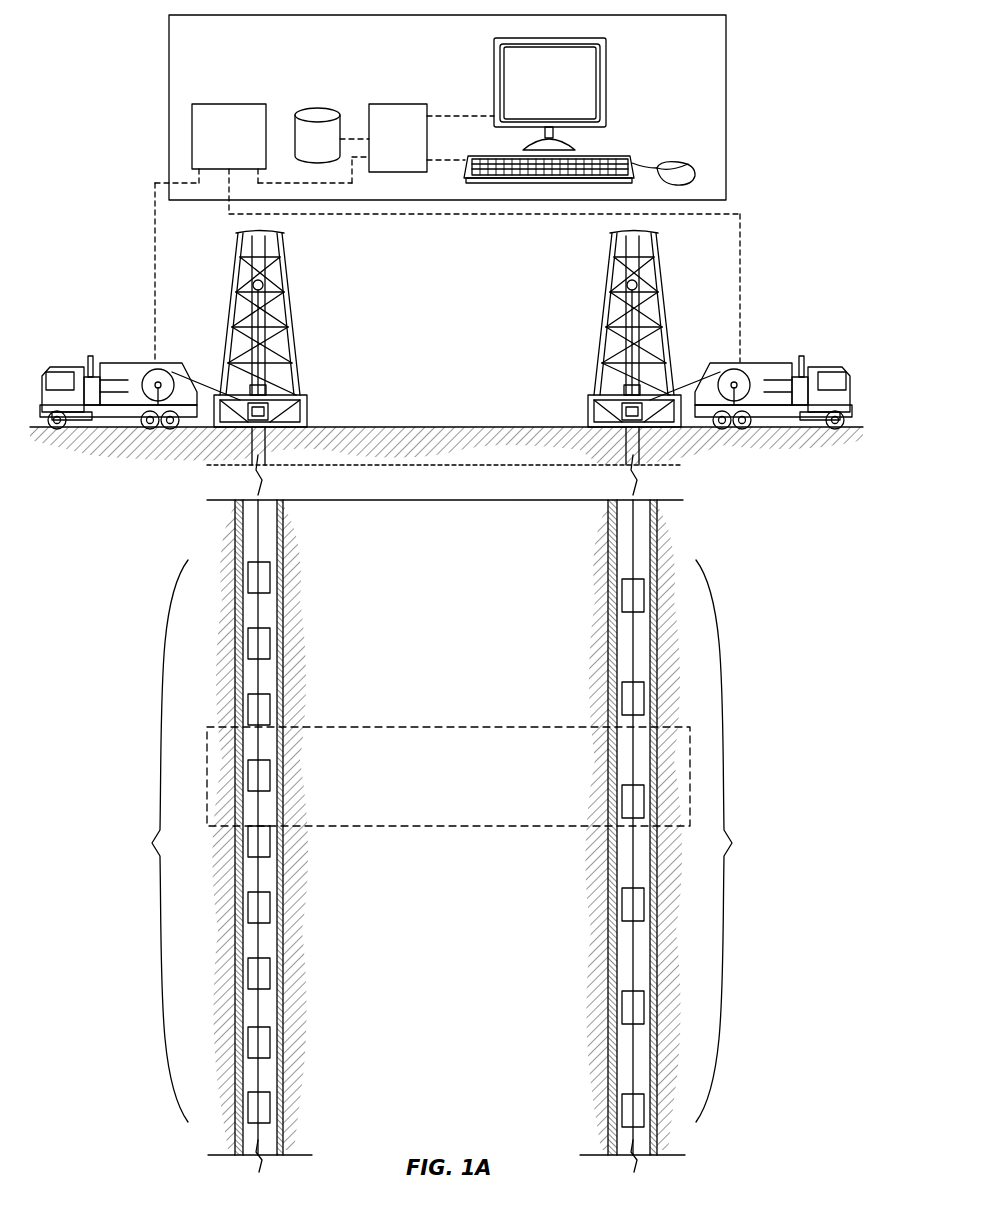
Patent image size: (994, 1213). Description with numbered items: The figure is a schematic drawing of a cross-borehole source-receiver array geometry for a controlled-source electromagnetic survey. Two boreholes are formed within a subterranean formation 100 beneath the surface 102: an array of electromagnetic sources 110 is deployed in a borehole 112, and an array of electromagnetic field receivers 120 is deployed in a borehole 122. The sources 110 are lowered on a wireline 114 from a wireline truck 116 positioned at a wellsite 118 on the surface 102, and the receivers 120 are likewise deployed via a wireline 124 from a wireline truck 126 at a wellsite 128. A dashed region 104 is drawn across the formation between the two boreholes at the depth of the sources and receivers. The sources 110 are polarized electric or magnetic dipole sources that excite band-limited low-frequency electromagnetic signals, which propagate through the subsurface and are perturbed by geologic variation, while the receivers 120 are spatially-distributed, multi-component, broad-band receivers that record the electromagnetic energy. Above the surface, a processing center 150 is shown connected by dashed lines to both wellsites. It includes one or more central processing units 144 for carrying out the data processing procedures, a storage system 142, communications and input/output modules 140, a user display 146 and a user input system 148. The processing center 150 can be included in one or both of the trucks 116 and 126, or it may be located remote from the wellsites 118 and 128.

The subterranean formation 100 is at (318, 670).
The surface 102 is at (433, 425).
The region of interest 104 is at (447, 827).
The array of electromagnetic sources 110 is at (149, 841).
The borehole 112 is at (236, 545).
The wireline 114 is at (262, 545).
The wireline truck 116 is at (117, 362).
The wellsite 118 is at (310, 325).
The array of electromagnetic field receivers 120 is at (737, 841).
The borehole 122 is at (609, 545).
The wireline 124 is at (637, 545).
The wireline truck 126 is at (777, 362).
The wellsite 128 is at (573, 393).
The communications and input/output modules 140 is at (248, 146).
The storage system 142 is at (336, 149).
The central processing units 144 is at (417, 147).
The user display 146 is at (568, 93).
The user input system 148 is at (631, 150).
The processing center 150 is at (224, 62).